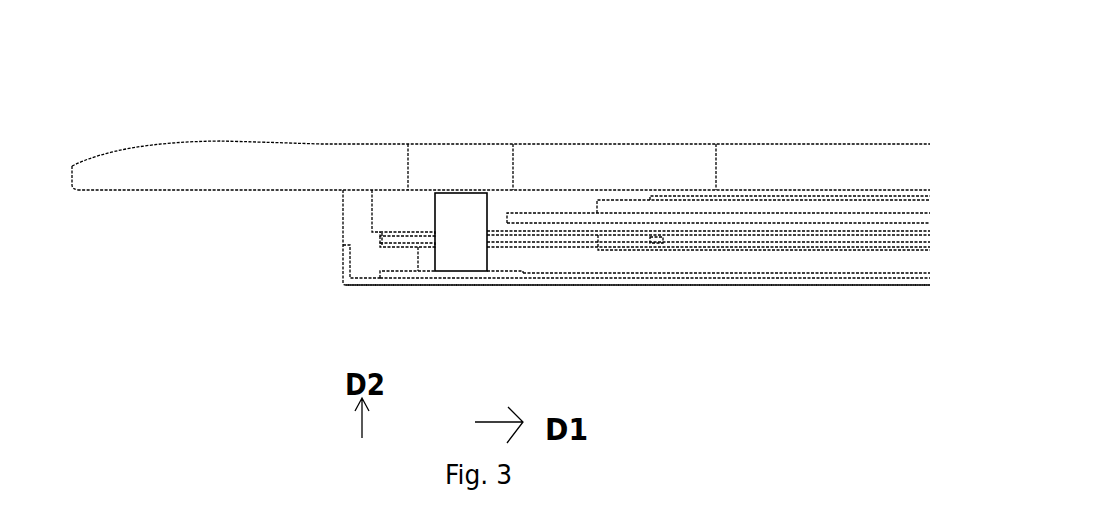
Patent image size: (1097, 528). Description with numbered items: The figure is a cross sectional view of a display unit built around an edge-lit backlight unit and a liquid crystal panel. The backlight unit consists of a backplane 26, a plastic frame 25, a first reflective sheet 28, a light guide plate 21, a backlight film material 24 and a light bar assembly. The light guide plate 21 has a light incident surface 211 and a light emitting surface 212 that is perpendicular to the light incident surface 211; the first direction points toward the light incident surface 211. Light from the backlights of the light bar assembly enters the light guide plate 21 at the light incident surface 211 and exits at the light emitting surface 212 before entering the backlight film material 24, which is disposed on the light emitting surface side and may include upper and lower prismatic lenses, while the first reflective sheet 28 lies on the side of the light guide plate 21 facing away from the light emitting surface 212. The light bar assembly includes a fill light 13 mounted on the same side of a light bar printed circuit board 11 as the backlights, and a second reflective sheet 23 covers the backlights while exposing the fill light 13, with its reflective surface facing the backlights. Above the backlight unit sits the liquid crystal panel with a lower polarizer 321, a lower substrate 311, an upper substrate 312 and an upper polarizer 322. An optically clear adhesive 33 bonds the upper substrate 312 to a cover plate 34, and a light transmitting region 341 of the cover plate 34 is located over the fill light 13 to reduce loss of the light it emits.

The light bar printed circuit board 11 is at (398, 273).
The fill light 13 is at (478, 262).
The light guide plate 21 is at (552, 263).
The light incident surface 211 is at (493, 258).
The light emitting surface 212 is at (717, 250).
The second reflective sheet 23 is at (542, 238).
The backlight film material 24 is at (900, 240).
The plastic frame 25 is at (352, 213).
The backplane 26 is at (345, 255).
The first reflective sheet 28 is at (652, 273).
The lower substrate 311 is at (548, 213).
The upper substrate 312 is at (628, 206).
The lower polarizer 321 is at (902, 222).
The upper polarizer 322 is at (710, 203).
The optically clear adhesive 33 is at (798, 197).
The cover plate 34 is at (87, 175).
The light transmitting region 341 is at (427, 175).